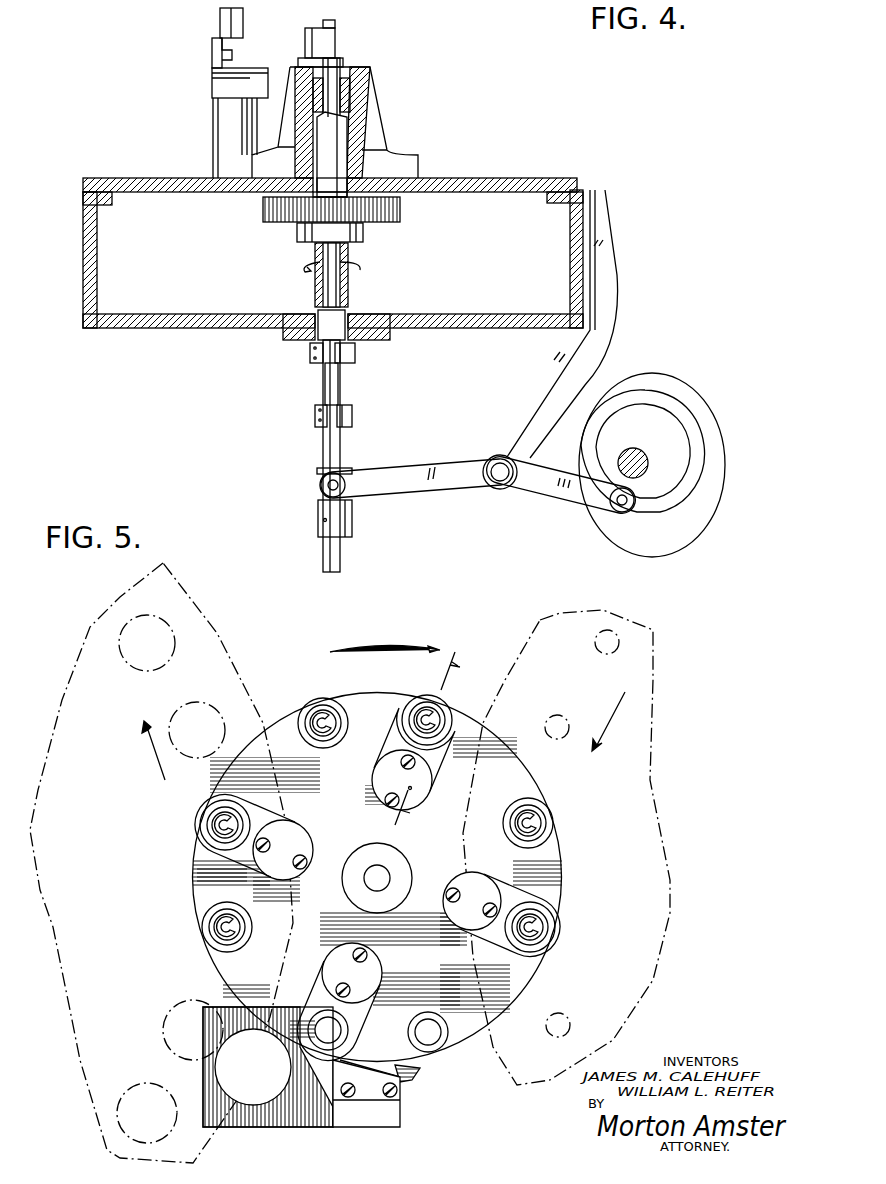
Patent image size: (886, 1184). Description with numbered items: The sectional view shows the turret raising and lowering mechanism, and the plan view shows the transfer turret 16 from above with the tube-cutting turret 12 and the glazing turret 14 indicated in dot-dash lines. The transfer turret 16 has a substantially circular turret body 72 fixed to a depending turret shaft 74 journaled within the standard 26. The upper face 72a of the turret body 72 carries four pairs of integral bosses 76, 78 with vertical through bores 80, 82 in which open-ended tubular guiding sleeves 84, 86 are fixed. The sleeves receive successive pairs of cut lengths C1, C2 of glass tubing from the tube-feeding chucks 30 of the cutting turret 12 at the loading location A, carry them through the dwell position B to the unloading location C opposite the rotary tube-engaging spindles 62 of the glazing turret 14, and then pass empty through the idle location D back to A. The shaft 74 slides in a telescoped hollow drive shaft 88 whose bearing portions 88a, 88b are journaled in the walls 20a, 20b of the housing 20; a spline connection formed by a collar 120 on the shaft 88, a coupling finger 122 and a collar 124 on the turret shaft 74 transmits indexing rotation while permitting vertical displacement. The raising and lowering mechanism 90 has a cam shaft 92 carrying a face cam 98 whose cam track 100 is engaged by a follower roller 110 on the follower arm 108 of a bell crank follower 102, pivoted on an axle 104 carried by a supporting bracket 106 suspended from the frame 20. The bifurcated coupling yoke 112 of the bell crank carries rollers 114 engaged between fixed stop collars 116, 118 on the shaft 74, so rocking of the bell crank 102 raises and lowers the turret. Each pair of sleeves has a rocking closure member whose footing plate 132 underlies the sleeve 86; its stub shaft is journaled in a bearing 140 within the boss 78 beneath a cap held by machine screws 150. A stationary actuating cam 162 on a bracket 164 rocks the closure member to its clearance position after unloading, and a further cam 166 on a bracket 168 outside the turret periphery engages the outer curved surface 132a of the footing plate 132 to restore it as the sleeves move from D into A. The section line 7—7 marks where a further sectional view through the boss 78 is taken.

In FIG. 5, the tube-cutting turret 12 is at (220, 642).
In FIG. 5, the glazing turret 14 is at (645, 660).
In FIG. 5, the transfer turret 16 is at (280, 697).
In FIG. 4, the housing 20 is at (560, 178).
In FIG. 4, the lower wall of housing 20a is at (480, 181).
In FIG. 4, the upper wall of housing 20b is at (500, 328).
In FIG. 4, the standard 26 is at (375, 115).
In FIG. 5, the tube-feeding chucks 30 is at (128, 658).
In FIG. 5, the rotary tube-engaging spindles 62 is at (565, 715).
In FIG. 5, the turret body 72 is at (530, 784).
In FIG. 5, the upper face of turret body 72a is at (503, 770).
In FIG. 4, the turret shaft 74 is at (345, 78).
In FIG. 5, the turret shaft 74 is at (380, 878).
In FIG. 5, the boss 76 is at (305, 740).
In FIG. 4, the boss 78 is at (265, 212).
In FIG. 5, the boss 78 is at (390, 742).
In FIG. 5, the through bore 80 is at (323, 736).
In FIG. 5, the through bore 82 is at (443, 715).
In FIG. 5, the tubular guiding sleeve 84 is at (340, 718).
In FIG. 5, the tubular guiding sleeve 86 is at (205, 826).
In FIG. 4, the hollow cylindrical drive shaft 88 is at (315, 290).
In FIG. 4, the bearing portion 88a is at (335, 330).
In FIG. 4, the bearing portion 88b is at (350, 185).
In FIG. 4, the raising and lowering mechanism 90 is at (671, 435).
In FIG. 4, the cam shaft 92 is at (640, 455).
In FIG. 4, the face cam 98 is at (712, 505).
In FIG. 4, the cam track 100 is at (685, 420).
In FIG. 4, the bell crank follower 102 is at (455, 482).
In FIG. 4, the axle 104 is at (500, 480).
In FIG. 4, the supporting bracket 106 is at (615, 308).
In FIG. 4, the follower arm 108 is at (572, 493).
In FIG. 4, the follower roller 110 is at (623, 512).
In FIG. 4, the bifurcated coupling yoke 112 is at (400, 490).
In FIG. 4, the rollers 114 is at (322, 487).
In FIG. 4, the fixed stop collar 116 is at (320, 470).
In FIG. 4, the fixed stop collar 118 is at (318, 500).
In FIG. 4, the coupling head or collar 120 is at (356, 355).
In FIG. 5, the coupling head or collar 120 is at (444, 748).
In FIG. 4, the coupling finger 122 is at (340, 392).
In FIG. 4, the coupling head or collar 124 is at (353, 413).
In FIG. 5, the footing plate 132 is at (328, 716).
In FIG. 5, the outer curved surface of footing plate 132a is at (405, 1092).
In FIG. 5, the bearing 140 is at (378, 788).
In FIG. 5, the machine screws 150 is at (408, 766).
In FIG. 4, the closure actuating cam 162 is at (305, 40).
In FIG. 4, the stationary supporting bracket 164 is at (330, 60).
In FIG. 4, the actuating cam 166 is at (243, 20).
In FIG. 5, the actuating cam 166 is at (372, 1105).
In FIG. 4, the supporting bracket 168 is at (222, 82).
In FIG. 5, the supporting bracket 168 is at (302, 1118).
In FIG. 5, the loading location A is at (185, 884).
In FIG. 5, the idle location B is at (388, 674).
In FIG. 5, the unloading location C is at (573, 883).
In FIG. 5, the idle location D is at (445, 1105).
In FIG. 5, the cut length of glass tubing C1 is at (320, 710).
In FIG. 5, the cut length of glass tubing C2 is at (425, 705).
In FIG. 5, the section line 7- 7 is at (434, 736).